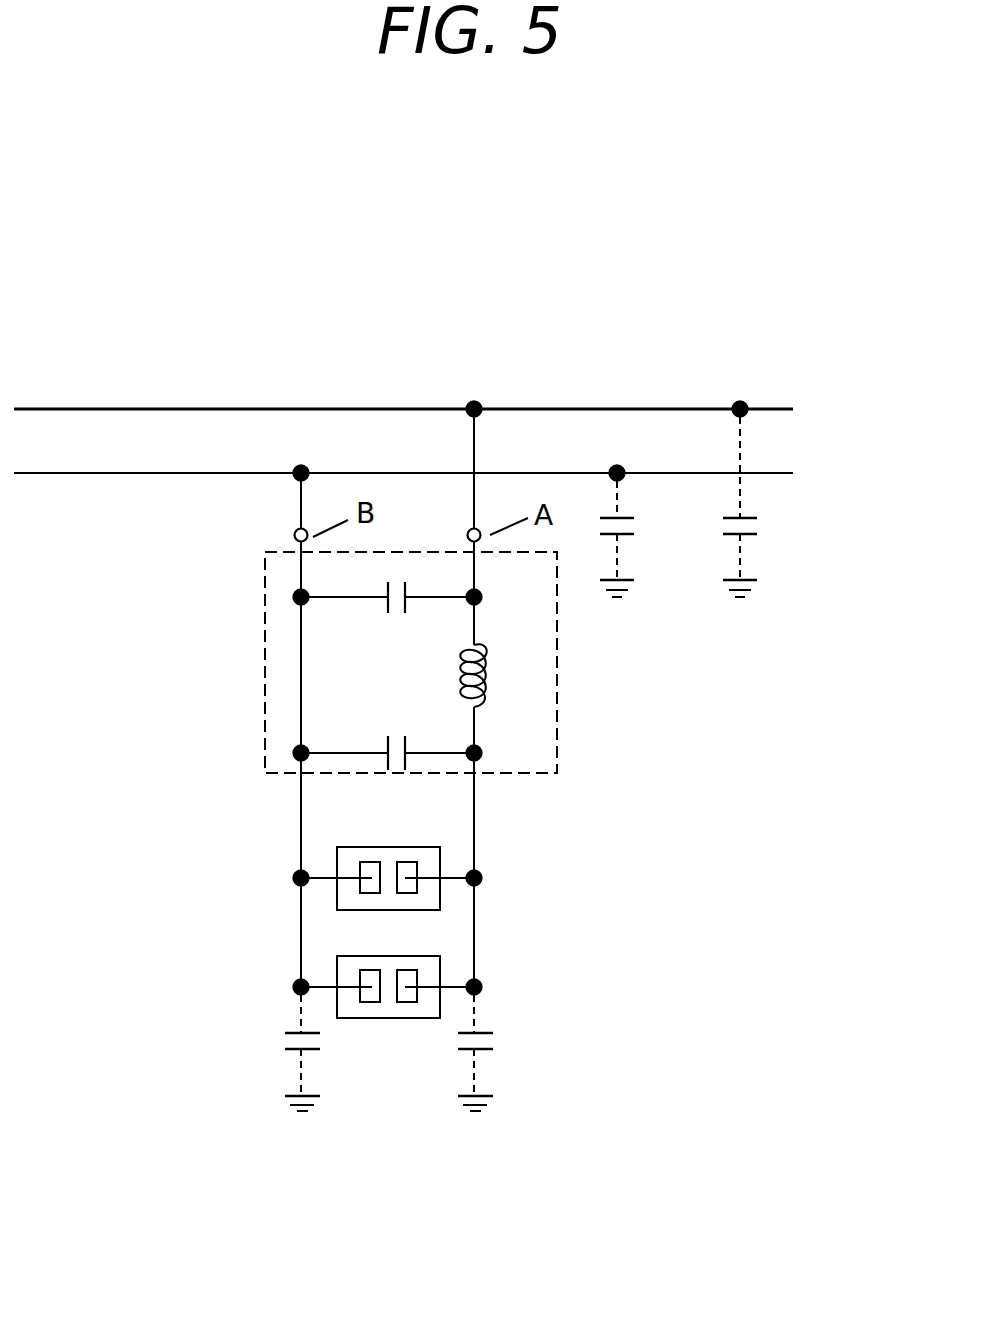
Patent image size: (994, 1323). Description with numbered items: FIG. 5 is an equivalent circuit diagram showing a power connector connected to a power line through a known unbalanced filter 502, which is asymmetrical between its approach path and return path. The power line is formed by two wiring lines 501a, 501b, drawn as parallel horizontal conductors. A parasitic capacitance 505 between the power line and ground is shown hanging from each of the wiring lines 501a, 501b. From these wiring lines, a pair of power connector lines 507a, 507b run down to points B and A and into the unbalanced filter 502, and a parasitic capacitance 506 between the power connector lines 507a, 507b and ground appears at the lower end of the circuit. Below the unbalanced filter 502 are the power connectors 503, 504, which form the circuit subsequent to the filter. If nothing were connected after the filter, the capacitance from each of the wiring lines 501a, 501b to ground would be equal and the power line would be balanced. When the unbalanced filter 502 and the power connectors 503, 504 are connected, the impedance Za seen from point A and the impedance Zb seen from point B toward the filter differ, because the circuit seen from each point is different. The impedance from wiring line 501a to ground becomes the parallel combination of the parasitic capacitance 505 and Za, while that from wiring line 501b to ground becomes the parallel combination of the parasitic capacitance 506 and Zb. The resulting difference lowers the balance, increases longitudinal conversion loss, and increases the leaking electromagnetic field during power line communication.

The wiring line 501a is at (467, 402).
The wiring line 501b is at (467, 470).
The unbalanced filter 502 is at (265, 605).
The power connector 503 is at (338, 863).
The power connector 504 is at (340, 970).
The parasitic capacitance between power line and ground 505 is at (630, 537).
The parasitic capacitance between power connector lines and ground 506 is at (312, 1052).
The power connector line 507a is at (301, 500).
The power connector line 507b is at (474, 443).